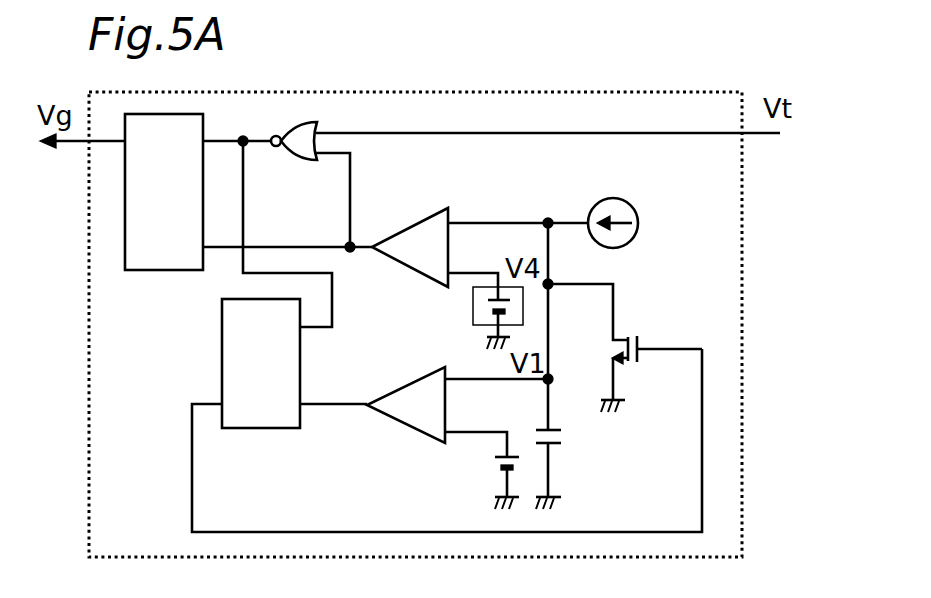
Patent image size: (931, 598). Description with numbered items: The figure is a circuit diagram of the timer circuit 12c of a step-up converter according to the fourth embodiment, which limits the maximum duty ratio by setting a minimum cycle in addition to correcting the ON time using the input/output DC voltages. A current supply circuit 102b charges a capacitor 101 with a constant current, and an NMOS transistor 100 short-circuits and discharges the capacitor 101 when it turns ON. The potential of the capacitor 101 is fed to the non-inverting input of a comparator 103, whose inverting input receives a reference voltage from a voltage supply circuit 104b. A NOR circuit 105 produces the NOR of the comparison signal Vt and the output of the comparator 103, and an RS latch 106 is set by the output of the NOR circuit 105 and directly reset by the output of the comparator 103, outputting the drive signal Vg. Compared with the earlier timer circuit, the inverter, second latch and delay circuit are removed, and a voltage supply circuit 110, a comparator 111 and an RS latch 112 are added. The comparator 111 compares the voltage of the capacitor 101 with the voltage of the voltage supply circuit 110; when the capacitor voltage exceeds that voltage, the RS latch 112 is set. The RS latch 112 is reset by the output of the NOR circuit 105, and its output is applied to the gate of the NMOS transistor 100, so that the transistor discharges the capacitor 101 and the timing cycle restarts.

The timer circuit 12c is at (745, 318).
The NMOS transistor 100 is at (645, 330).
The capacitor 101 is at (565, 470).
The current supply circuit 102b is at (592, 205).
The comparator 103 is at (405, 268).
The voltage supply circuit 104b is at (470, 296).
The NOR circuit 105 is at (305, 162).
The RS latch 106 is at (168, 272).
The voltage supply circuit 110 is at (500, 478).
The comparator 111 is at (393, 430).
The RS latch 112 is at (247, 430).